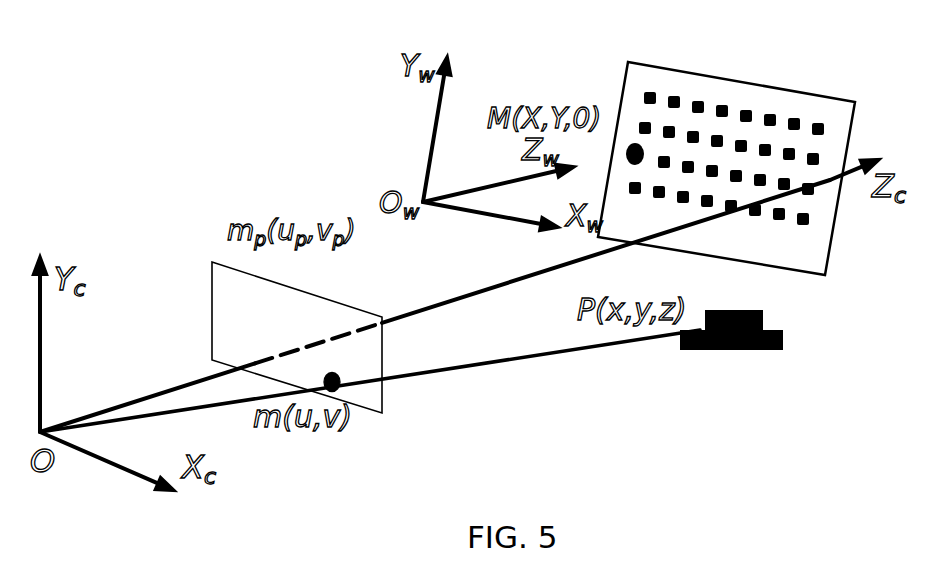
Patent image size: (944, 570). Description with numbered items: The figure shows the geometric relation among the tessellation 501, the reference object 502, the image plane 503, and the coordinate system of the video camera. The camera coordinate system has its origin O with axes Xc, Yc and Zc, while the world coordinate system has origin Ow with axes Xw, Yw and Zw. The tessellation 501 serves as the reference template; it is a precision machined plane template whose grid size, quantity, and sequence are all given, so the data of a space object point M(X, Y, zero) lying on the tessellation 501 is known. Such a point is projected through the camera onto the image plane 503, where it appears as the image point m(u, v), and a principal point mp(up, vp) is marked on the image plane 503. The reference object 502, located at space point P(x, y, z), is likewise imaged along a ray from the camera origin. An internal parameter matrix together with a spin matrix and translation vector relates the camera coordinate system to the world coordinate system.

The tessellation 501 is at (730, 155).
The reference object 502 is at (798, 321).
The image plane 503 is at (327, 331).